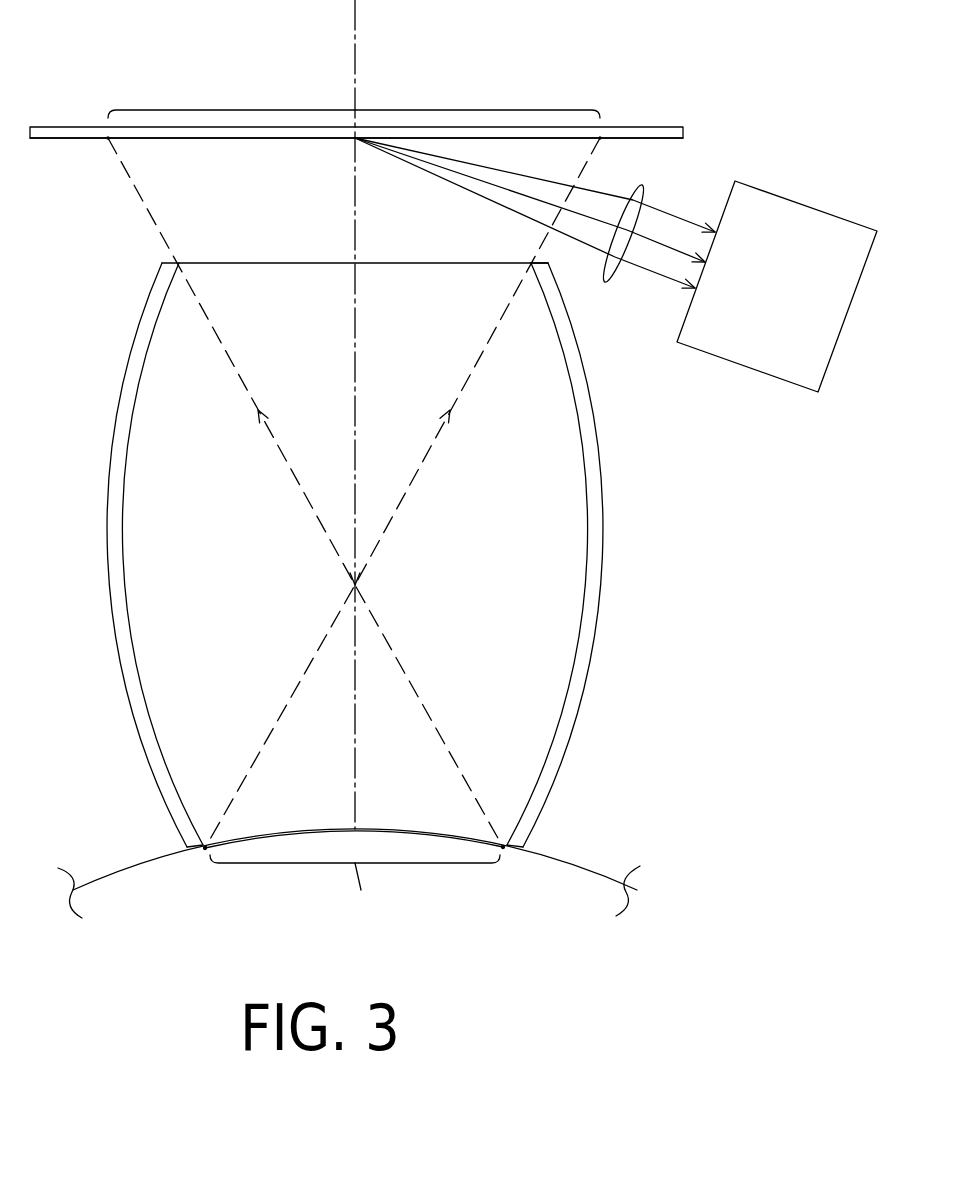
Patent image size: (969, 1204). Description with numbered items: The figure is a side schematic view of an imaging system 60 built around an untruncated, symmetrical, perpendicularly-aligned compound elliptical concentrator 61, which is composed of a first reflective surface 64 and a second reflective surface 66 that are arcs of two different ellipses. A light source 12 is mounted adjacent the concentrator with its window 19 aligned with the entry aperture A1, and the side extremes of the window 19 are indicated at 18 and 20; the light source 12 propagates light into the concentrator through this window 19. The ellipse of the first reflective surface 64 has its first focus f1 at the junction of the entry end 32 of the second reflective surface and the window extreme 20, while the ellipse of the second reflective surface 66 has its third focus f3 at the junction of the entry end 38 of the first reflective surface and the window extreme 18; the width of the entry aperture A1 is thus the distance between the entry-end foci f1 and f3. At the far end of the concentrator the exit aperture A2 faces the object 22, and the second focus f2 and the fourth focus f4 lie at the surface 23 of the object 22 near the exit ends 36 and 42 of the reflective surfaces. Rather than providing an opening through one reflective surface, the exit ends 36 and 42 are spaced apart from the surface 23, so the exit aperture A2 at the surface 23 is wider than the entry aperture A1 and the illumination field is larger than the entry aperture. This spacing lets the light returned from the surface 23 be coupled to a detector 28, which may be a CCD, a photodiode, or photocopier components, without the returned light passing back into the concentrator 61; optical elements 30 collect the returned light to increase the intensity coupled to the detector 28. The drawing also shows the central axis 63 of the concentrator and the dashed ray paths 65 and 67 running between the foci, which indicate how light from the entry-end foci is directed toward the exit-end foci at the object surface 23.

The light source 12 is at (127, 868).
The extreme of the window 18 is at (205, 849).
The window 19 is at (333, 828).
The extreme of the window 20 is at (503, 849).
The object 22 is at (80, 131).
The surface of the object 23 is at (88, 139).
The detector 28 is at (787, 368).
The optical elements 30 is at (640, 188).
The entry end of the second reflective surface 32 is at (522, 842).
The exit end of the second reflective surface 36 is at (543, 275).
The entry end of the first reflective surface 38 is at (188, 840).
The exit end of the first reflective surface 42 is at (160, 280).
The imaging system 60 is at (372, 555).
The compound elliptical concentrator 61 is at (596, 641).
The optical axis 63 is at (357, 648).
The first reflective surface 64 is at (113, 453).
The left ray path 65 is at (292, 692).
The second reflective surface 66 is at (601, 509).
The right ray path 67 is at (407, 673).
The entry aperture A1 is at (355, 887).
The exit aperture A2 is at (357, 110).
The first focus f1 is at (503, 845).
The second focus f2 is at (600, 140).
The third focus f3 is at (205, 846).
The fourth focus f4 is at (108, 140).